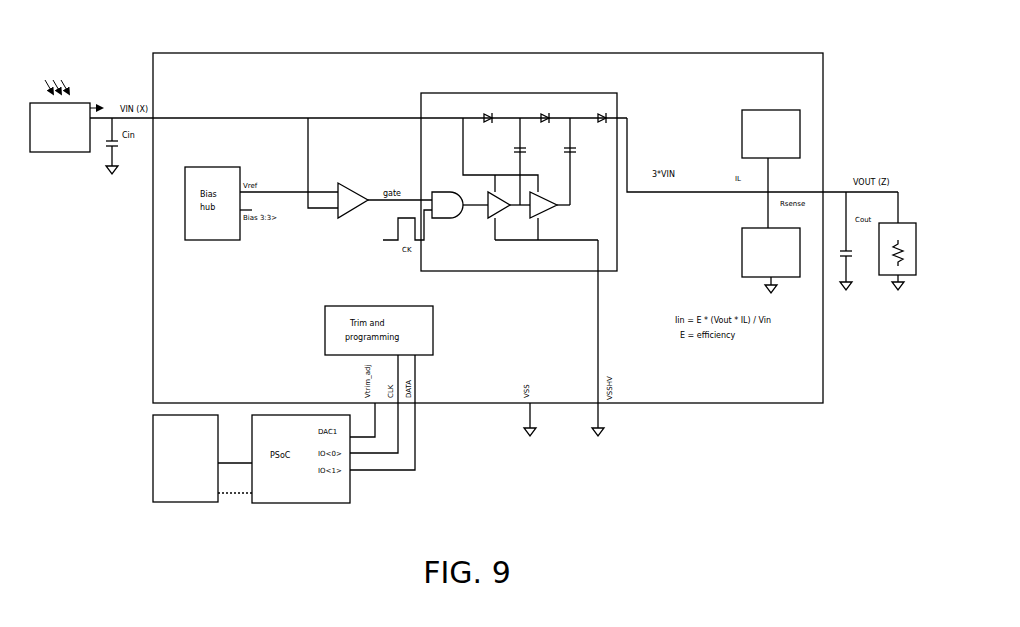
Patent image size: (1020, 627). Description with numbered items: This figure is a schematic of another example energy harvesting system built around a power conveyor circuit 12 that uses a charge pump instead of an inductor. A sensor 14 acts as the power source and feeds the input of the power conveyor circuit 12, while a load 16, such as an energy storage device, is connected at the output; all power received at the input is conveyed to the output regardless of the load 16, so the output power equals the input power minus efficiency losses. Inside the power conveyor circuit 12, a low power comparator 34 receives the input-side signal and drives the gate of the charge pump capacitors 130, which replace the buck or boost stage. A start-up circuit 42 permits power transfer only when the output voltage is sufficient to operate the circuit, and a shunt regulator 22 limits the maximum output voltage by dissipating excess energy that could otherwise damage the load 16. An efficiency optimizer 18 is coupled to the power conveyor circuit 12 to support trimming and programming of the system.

The power conveyor circuit 12 is at (672, 30).
The sensor 14 is at (48, 141).
The load 16 is at (922, 272).
The efficiency optimizer 18 is at (172, 471).
The shunt regulator 22 is at (758, 265).
The low power comparator 34 is at (358, 186).
The start-up circuit 42 is at (758, 147).
The charge pump capacitors 130 is at (543, 277).